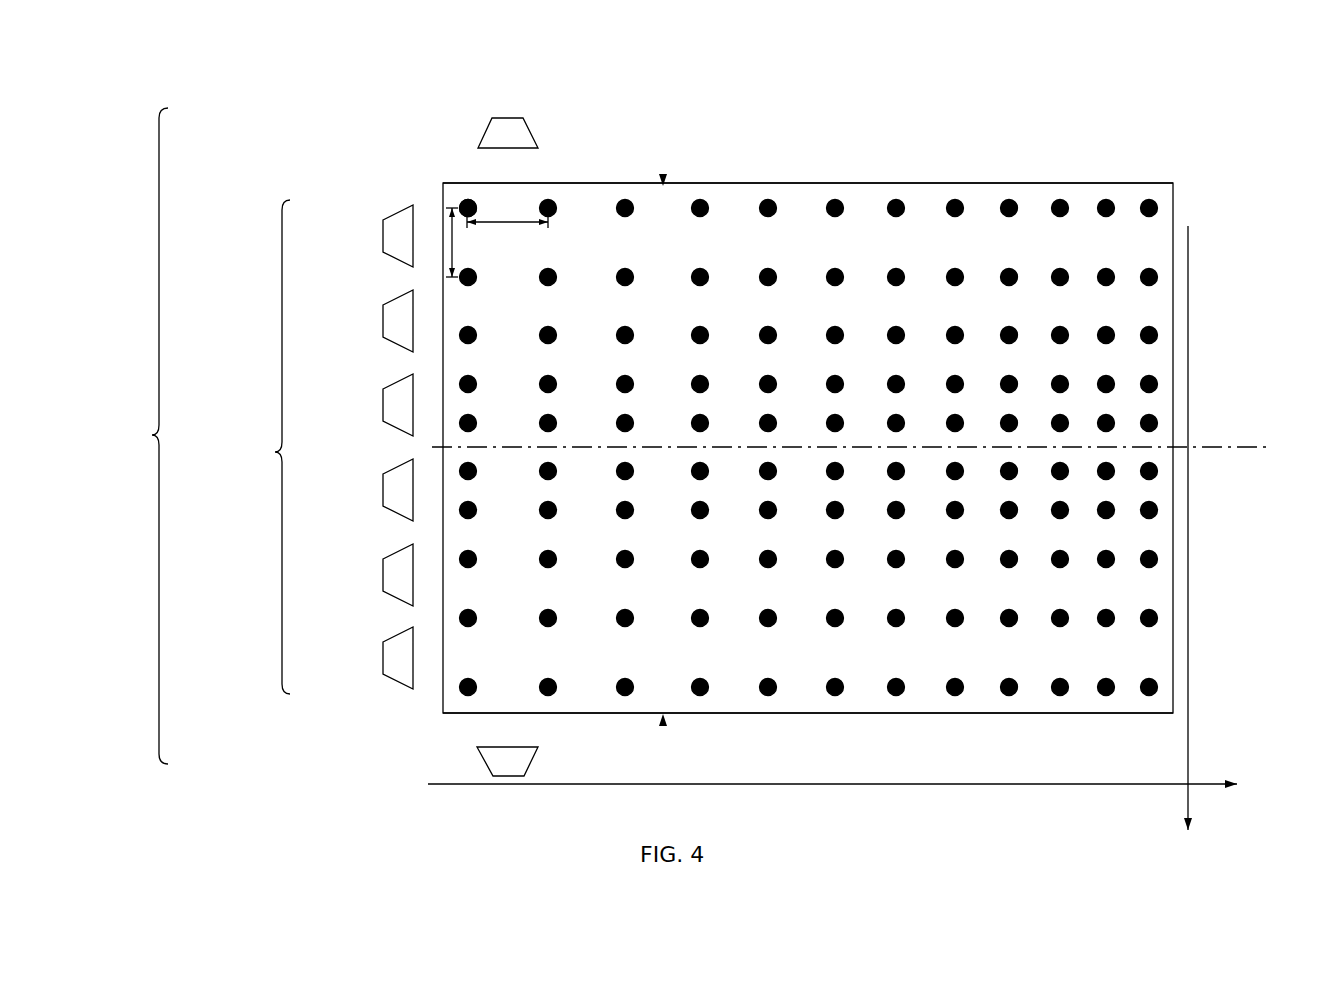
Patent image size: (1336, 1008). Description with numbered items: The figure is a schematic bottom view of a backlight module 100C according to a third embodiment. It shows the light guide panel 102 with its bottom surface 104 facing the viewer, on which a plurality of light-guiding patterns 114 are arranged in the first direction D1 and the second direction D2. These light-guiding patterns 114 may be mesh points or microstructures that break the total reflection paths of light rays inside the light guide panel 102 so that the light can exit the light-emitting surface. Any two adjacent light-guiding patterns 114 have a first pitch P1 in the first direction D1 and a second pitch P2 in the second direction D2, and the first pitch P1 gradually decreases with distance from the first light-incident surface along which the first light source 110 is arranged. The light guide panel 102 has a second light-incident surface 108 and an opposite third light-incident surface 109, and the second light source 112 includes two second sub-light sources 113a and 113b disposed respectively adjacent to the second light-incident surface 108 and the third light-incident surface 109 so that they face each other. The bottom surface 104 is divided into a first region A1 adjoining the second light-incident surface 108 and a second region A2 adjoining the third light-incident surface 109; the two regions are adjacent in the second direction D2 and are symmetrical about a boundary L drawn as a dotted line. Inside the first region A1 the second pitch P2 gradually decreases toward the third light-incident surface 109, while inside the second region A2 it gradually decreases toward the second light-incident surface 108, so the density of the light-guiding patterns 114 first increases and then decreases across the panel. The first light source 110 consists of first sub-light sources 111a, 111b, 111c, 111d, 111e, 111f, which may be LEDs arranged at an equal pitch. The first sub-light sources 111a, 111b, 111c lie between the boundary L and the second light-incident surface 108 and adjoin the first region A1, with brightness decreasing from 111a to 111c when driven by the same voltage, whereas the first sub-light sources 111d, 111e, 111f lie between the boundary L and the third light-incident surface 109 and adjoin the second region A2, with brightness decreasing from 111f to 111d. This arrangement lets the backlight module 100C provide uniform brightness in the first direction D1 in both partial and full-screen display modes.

The backlight module 100C is at (180, 83).
The light guide panel 102 is at (1110, 182).
The bottom surface 104 is at (808, 176).
The second light-incident surface 108 is at (1016, 175).
The third light-incident surface 109 is at (936, 726).
The first light source 110 is at (321, 447).
The first sub-light source 111a is at (383, 237).
The first sub-light source 111b is at (383, 322).
The first sub-light source 111c is at (383, 406).
The first sub-light source 111d is at (383, 491).
The first sub-light source 111e is at (383, 576).
The first sub-light source 111f is at (383, 659).
The second light source 112 is at (323, 443).
The second sub-light source 113a is at (480, 137).
The second sub-light source 113b is at (480, 757).
The light-guiding pattern 114 is at (463, 190).
The first region A1 is at (663, 176).
The second region A2 is at (663, 725).
The first pitch P1 is at (507, 212).
The second pitch P2 is at (465, 242).
The boundary L is at (1260, 445).
The first direction D1 is at (1207, 782).
The second direction D2 is at (1185, 803).